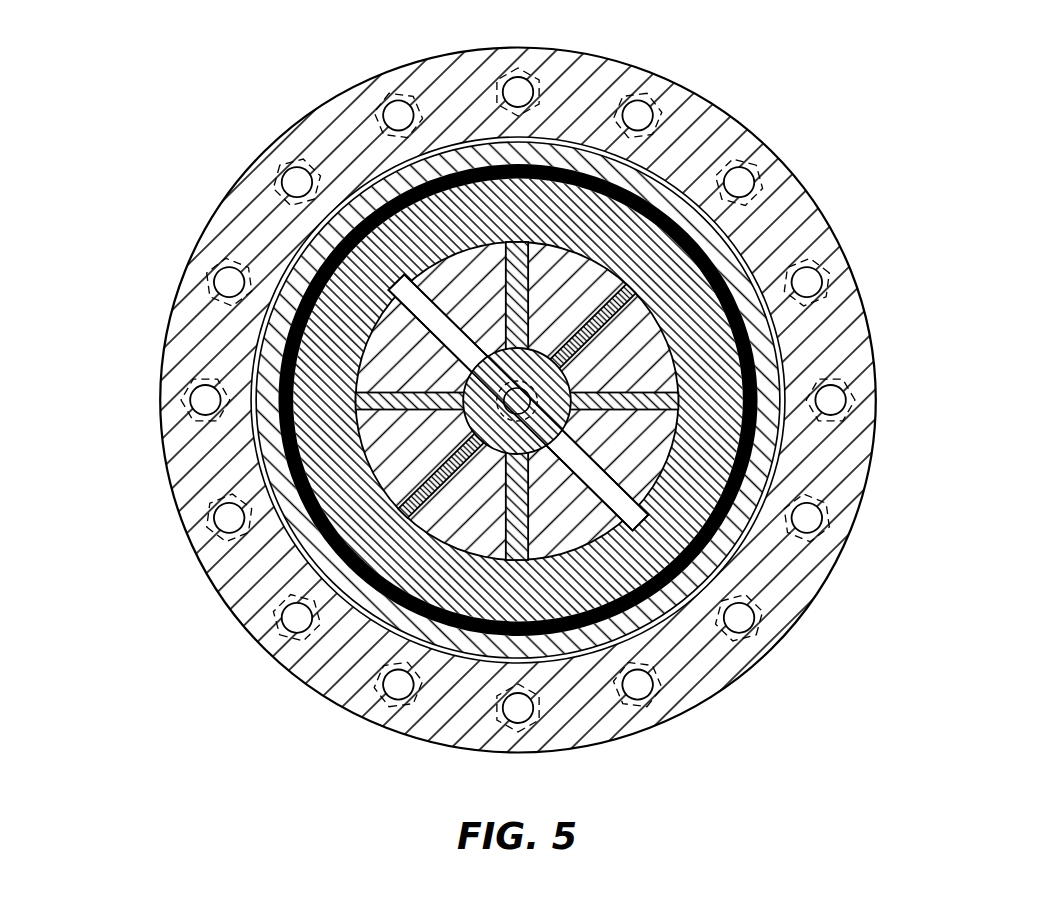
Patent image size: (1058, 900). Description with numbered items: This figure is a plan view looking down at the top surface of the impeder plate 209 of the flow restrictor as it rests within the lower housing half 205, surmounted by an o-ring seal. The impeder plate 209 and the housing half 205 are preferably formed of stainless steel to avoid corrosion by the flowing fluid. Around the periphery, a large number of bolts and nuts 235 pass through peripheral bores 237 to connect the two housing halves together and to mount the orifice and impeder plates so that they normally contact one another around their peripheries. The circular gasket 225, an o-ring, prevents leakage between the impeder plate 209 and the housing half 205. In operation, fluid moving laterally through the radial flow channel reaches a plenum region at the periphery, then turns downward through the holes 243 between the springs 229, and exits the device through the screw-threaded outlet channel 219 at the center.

The housing half 205 is at (775, 595).
The impeder plate 209 is at (420, 585).
The outlet channel 219 is at (545, 388).
The circular gasket 225 is at (533, 170).
The springs 229 is at (400, 388).
The nuts 235 is at (243, 172).
The peripheral bores 237 is at (296, 181).
The holes 243 is at (548, 556).